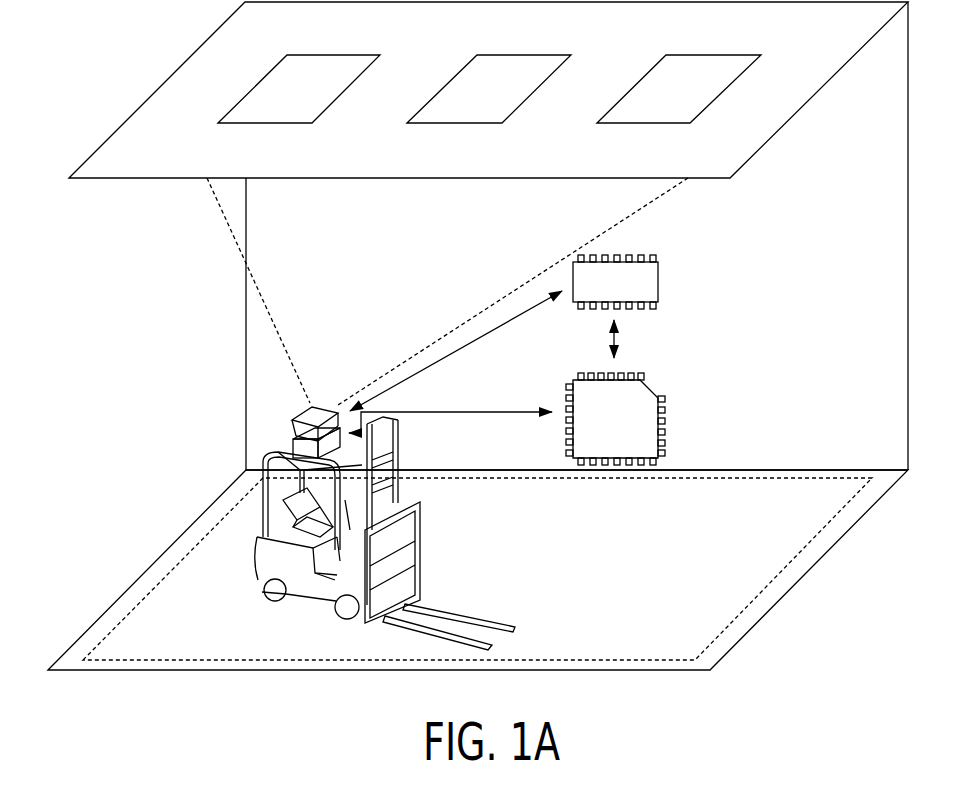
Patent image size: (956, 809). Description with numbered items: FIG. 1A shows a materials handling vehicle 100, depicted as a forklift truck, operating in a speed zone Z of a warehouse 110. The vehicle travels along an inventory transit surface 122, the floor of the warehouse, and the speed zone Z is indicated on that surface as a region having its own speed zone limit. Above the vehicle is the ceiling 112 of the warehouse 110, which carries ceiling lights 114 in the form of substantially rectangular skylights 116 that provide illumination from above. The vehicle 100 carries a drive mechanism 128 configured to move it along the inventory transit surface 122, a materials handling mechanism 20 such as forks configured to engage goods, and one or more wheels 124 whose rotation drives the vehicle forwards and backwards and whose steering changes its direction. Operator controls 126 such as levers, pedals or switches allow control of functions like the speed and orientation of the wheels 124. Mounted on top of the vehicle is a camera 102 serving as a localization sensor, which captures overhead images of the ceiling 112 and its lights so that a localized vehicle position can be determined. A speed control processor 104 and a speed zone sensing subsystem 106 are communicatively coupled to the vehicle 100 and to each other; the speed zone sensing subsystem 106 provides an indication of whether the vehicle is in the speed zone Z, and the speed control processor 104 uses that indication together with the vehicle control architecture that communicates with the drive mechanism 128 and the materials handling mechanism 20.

The warehouse 110 is at (466, 235).
The ceiling 112 is at (488, 90).
The ceiling lights 114 is at (453, 94).
The skylights 116 is at (283, 124).
The speed control processor 104 is at (658, 282).
The speed zone sensing subsystem 106 is at (652, 386).
The camera 102 is at (288, 448).
The materials handling vehicle 100 is at (331, 560).
The drive mechanism 128 is at (242, 571).
The operator controls 126 is at (325, 507).
The wheels 124 is at (260, 587).
The materials handling mechanism 20 is at (431, 587).
The inventory transit surface 122 is at (636, 574).
The speed zone Z is at (805, 548).